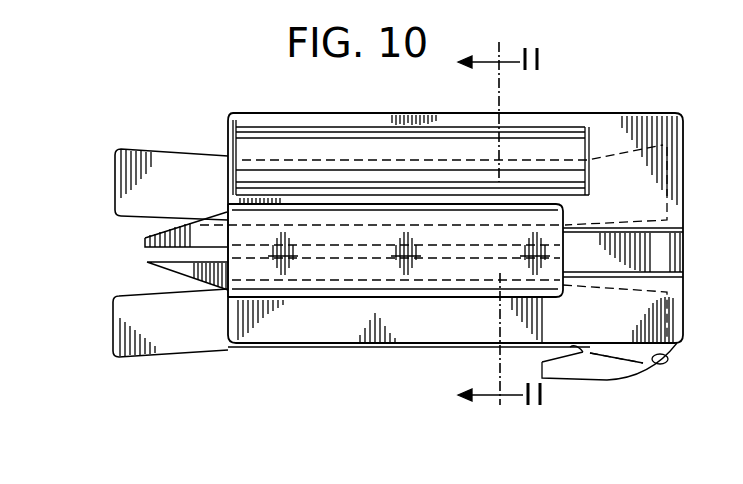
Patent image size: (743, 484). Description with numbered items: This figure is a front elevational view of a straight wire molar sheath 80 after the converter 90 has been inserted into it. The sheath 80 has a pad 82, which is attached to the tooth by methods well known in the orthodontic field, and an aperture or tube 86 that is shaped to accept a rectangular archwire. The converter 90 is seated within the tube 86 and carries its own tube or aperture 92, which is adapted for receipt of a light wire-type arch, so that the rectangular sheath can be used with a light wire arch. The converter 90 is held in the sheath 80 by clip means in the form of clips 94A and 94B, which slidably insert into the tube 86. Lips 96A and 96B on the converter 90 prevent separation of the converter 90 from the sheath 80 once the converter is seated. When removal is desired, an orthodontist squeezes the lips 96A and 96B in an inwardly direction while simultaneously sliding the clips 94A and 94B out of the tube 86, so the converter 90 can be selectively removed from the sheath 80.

The straight wire molar sheath 80 is at (173, 150).
The pad 82 is at (354, 348).
The tube 86 is at (312, 272).
The converter 90 is at (637, 112).
The tube 92 is at (559, 148).
The clip 94A is at (425, 256).
The clip 94B is at (364, 228).
The lip 96A is at (147, 263).
The lip 96B is at (145, 238).